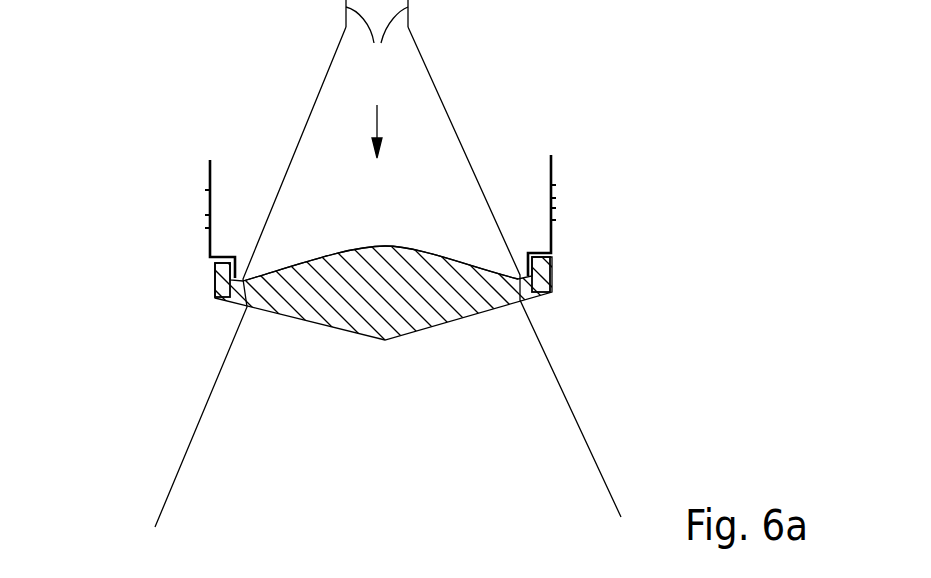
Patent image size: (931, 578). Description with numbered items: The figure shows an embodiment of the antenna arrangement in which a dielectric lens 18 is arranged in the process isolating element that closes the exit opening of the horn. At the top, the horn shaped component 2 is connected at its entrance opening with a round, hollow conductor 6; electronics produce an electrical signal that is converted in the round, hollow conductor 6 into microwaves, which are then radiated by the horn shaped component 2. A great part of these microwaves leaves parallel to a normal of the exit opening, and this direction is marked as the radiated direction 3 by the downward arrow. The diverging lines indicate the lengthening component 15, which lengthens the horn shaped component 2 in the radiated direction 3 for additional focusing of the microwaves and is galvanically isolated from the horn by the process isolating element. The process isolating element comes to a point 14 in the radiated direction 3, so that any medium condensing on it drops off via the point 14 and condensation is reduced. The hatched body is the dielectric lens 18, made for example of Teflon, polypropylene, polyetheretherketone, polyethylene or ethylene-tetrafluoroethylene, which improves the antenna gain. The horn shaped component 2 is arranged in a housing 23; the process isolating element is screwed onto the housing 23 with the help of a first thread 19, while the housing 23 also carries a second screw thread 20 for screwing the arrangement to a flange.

The horn shaped component 2 is at (433, 80).
The radiated direction 3 is at (380, 122).
The round, hollow conductor 6 is at (377, 41).
The point 14 is at (387, 355).
The lengthening component 15 is at (190, 446).
The dielectric lens 18 is at (348, 266).
The first thread 19 is at (222, 270).
The second screw thread 20 is at (208, 200).
The housing 23 is at (208, 170).